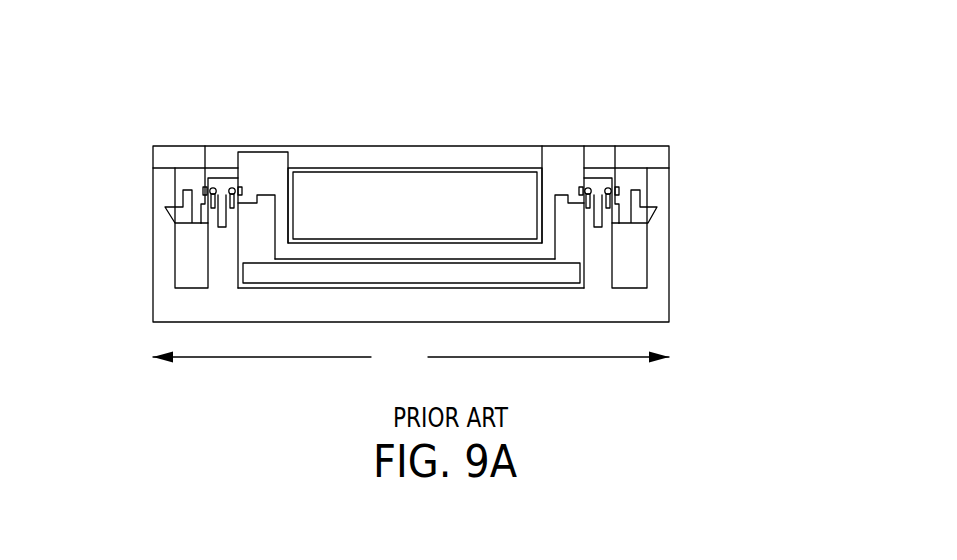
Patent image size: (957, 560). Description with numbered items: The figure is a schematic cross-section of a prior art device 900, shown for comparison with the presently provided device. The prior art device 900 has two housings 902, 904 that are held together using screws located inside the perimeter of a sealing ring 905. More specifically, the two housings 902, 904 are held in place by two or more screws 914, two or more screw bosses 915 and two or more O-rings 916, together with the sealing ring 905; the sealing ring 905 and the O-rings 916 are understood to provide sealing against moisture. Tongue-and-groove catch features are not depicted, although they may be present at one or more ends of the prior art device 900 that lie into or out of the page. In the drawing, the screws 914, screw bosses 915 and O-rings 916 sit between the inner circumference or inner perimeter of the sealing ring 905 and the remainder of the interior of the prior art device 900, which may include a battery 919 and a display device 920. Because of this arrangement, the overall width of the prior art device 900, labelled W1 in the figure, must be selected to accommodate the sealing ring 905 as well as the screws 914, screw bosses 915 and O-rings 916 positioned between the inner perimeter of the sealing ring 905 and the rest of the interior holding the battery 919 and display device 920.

The prior art device 900 is at (668, 40).
The housing 902 is at (155, 302).
The housing 904 is at (153, 157).
The sealing ring 905 is at (165, 210).
The screws 914 is at (213, 188).
The screw bosses 915 is at (207, 233).
The O-rings 916 is at (233, 188).
The battery 919 is at (316, 224).
The display device 920 is at (255, 277).